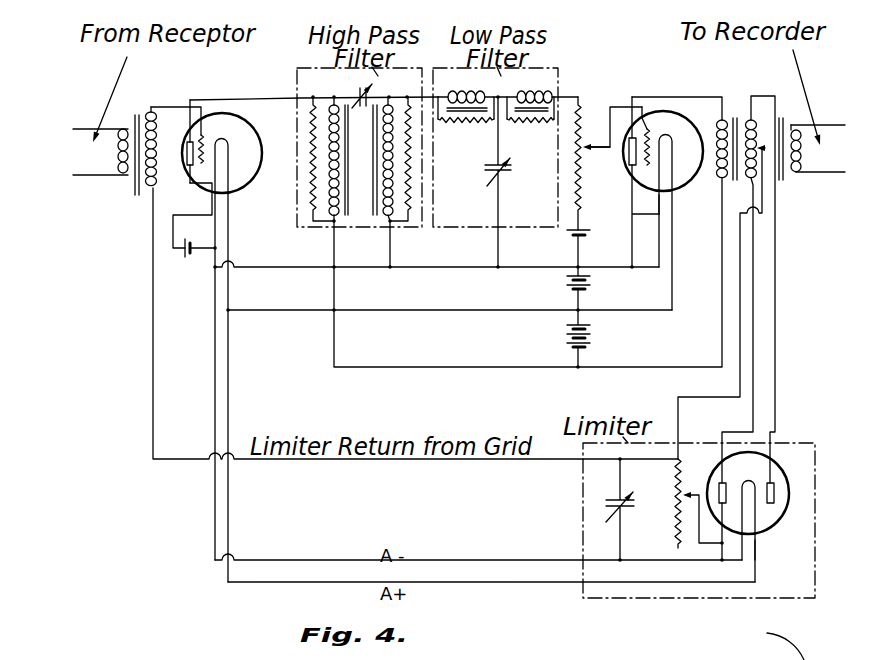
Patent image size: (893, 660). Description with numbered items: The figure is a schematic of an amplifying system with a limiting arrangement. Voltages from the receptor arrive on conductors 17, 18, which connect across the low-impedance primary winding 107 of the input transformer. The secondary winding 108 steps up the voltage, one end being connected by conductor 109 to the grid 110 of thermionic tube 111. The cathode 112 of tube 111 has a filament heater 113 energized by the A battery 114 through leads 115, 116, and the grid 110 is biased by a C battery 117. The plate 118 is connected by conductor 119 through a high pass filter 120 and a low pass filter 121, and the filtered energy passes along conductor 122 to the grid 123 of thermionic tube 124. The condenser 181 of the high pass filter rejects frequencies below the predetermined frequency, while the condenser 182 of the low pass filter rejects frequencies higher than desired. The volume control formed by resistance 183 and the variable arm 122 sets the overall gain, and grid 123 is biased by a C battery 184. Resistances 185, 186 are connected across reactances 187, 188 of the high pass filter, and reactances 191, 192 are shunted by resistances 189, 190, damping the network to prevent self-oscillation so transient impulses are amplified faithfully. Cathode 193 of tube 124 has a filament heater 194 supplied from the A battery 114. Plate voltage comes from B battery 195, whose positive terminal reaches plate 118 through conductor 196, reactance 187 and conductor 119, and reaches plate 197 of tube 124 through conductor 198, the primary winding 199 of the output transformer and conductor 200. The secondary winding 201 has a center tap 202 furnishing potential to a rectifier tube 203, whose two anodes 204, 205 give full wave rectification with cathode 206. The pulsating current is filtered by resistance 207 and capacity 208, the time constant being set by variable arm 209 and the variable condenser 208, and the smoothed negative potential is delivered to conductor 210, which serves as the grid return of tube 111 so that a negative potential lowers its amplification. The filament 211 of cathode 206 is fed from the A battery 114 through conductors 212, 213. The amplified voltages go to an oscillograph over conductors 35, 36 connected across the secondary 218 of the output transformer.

The conductor 17 is at (100, 118).
The conductor 18 is at (100, 189).
The conductor 35 is at (830, 124).
The conductor 36 is at (833, 169).
The primary winding 107 is at (137, 186).
The secondary winding 108 is at (162, 124).
The conductor 109 is at (173, 106).
The grid 110 is at (221, 140).
The thermionic tube 111 is at (255, 132).
The cathode 112 is at (207, 187).
The filament heater 113 is at (229, 151).
The A battery 114 is at (594, 282).
The lead 115 is at (275, 268).
The lead 116 is at (437, 309).
The C battery 117 is at (188, 262).
The plate 118 is at (190, 168).
The conductor 119 is at (240, 93).
The high pass filter 120 is at (298, 76).
The low pass filter 121 is at (556, 68).
The conductor 122 is at (620, 107).
The grid 123 is at (652, 131).
The thermionic tube 124 is at (681, 118).
The condenser 181 is at (353, 89).
The condenser 182 is at (523, 182).
The resistance 183 is at (585, 152).
The C battery 184 is at (568, 233).
The resistance 185 is at (311, 190).
The resistance 186 is at (393, 231).
The reactance 187 is at (340, 166).
The reactance 188 is at (384, 187).
The resistance 189 is at (466, 134).
The resistance 190 is at (534, 134).
The reactance 191 is at (477, 94).
The reactance 192 is at (542, 94).
The cathode 193 is at (656, 189).
The filament heater 194 is at (671, 163).
The B battery 195 is at (595, 339).
The conductor 196 is at (408, 367).
The plate 197 is at (630, 170).
The conductor 198 is at (650, 365).
The primary winding 199 is at (720, 179).
The conductor 200 is at (672, 97).
The secondary winding 201 is at (746, 112).
The center tap 202 is at (758, 216).
The rectifier tube 203 is at (777, 470).
The anode 204 is at (719, 489).
The anode 205 is at (775, 495).
The cathode 206 is at (748, 480).
The resistance 207 is at (675, 512).
The variable condenser 208 is at (641, 510).
The variable arm 209 is at (688, 542).
The conductor 210 is at (489, 460).
The filament 211 is at (757, 529).
The conductor 212 is at (448, 560).
The conductor 213 is at (490, 583).
The secondary 218 is at (797, 178).